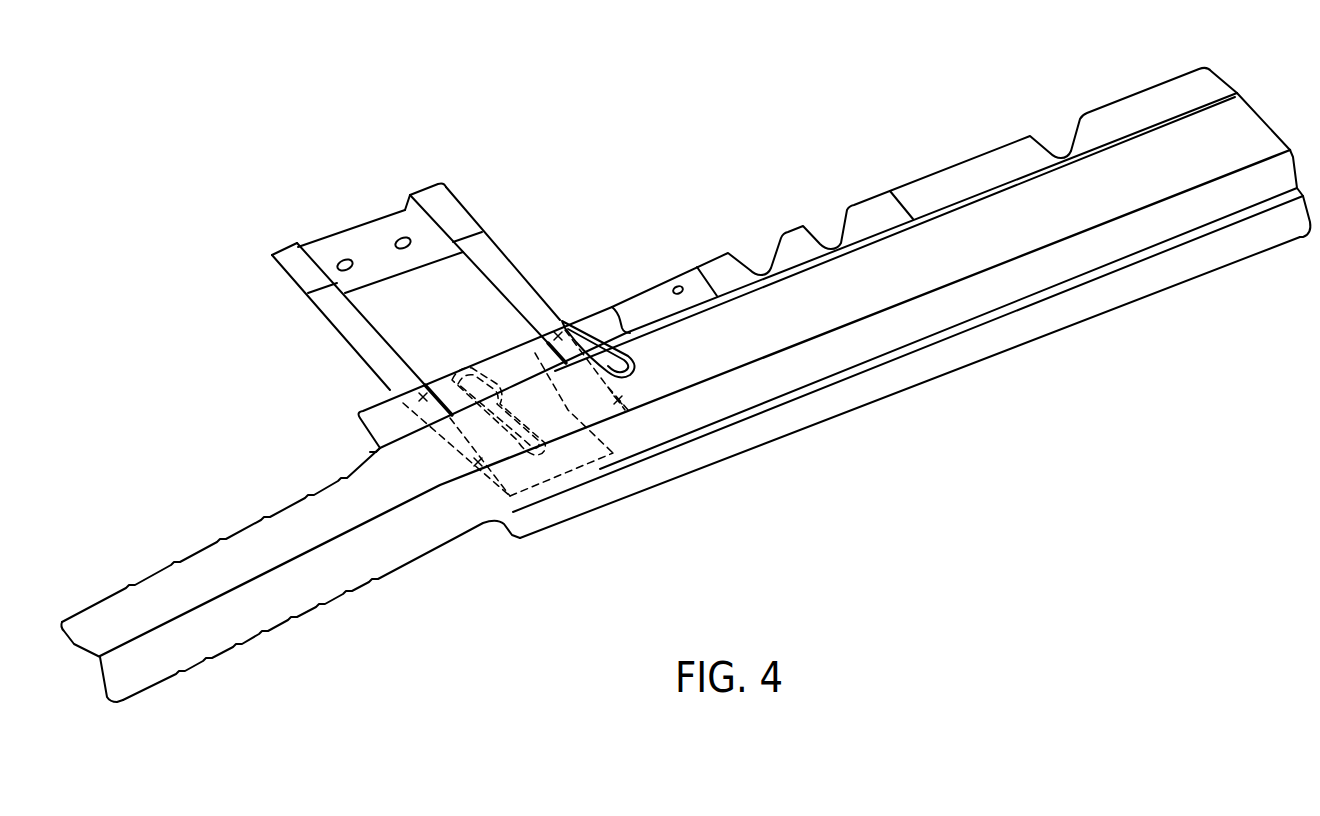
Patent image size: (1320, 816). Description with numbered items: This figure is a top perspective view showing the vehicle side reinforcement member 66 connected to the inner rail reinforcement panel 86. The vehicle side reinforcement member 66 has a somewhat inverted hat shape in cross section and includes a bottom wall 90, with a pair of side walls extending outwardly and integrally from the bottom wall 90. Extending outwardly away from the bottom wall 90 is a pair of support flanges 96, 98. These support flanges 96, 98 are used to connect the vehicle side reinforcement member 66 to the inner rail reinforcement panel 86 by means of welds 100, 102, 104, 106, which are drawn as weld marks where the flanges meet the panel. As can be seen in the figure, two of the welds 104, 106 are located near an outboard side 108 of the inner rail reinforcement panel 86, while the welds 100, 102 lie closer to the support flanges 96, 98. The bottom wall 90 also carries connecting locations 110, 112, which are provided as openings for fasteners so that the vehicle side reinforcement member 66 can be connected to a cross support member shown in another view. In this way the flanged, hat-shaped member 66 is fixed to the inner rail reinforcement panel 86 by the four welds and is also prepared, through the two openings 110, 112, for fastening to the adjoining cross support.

The vehicle side reinforcement member 66 is at (320, 326).
The inner rail reinforcement panel 86 is at (970, 227).
The bottom wall 90 is at (436, 316).
The support flange 96 is at (363, 346).
The support flange 98 is at (505, 268).
The weld 100 is at (418, 396).
The weld 102 is at (560, 331).
The weld 104 is at (478, 467).
The weld 106 is at (620, 400).
The outboard side 108 is at (803, 374).
The connecting location 110 is at (343, 259).
The connecting location 112 is at (400, 237).